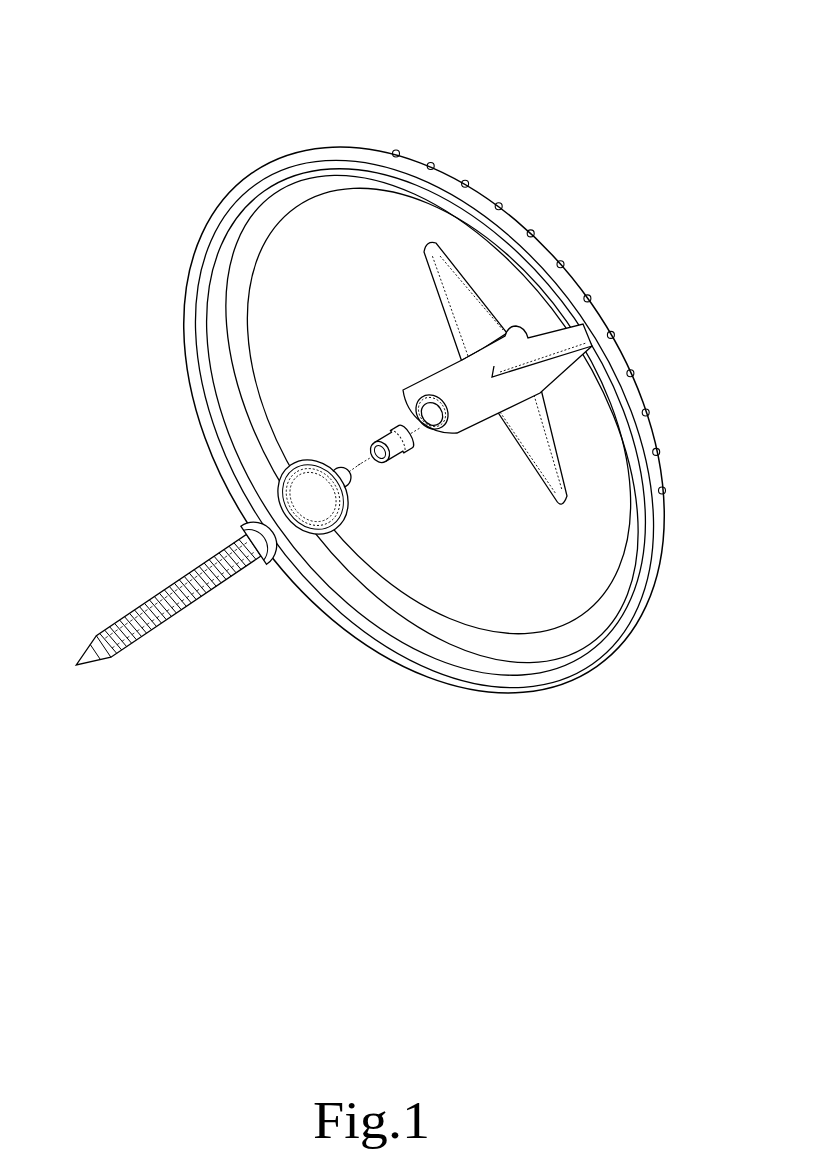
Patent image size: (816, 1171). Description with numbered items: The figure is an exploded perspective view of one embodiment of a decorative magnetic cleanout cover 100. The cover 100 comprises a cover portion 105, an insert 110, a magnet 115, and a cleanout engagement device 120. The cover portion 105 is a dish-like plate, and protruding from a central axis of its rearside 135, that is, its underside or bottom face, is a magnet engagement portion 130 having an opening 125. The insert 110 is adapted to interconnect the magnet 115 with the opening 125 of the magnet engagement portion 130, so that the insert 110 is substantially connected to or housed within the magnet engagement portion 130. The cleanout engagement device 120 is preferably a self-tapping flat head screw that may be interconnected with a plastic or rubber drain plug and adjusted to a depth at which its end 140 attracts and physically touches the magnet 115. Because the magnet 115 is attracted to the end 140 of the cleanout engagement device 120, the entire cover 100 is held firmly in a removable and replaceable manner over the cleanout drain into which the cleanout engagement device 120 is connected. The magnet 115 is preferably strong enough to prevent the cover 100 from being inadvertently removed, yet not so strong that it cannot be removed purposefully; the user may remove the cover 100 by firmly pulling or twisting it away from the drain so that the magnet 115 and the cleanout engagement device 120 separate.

The decorative magnetic cleanout cover 100 is at (612, 60).
The cover portion 105 is at (424, 419).
The insert 110 is at (481, 597).
The magnet 115 is at (220, 466).
The cleanout engagement device 120 is at (141, 599).
The opening 125 is at (575, 529).
The magnet engagement portion 130 is at (554, 373).
The rearside 135 is at (426, 422).
The end 140 is at (322, 640).